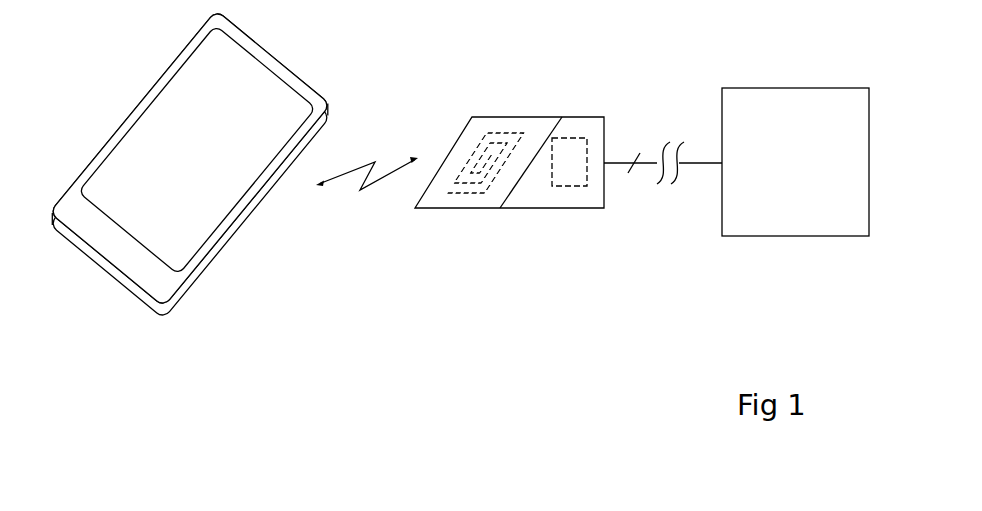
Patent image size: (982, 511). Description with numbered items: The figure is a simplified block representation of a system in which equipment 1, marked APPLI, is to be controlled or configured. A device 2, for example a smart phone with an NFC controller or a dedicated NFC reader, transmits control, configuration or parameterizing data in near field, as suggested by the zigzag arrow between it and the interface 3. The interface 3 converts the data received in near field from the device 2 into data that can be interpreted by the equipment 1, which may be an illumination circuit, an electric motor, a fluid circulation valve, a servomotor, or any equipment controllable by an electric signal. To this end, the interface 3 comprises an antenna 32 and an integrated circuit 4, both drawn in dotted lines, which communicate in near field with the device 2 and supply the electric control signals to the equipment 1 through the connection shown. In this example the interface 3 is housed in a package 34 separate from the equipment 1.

The equipment 1 is at (777, 87).
The device 2 is at (221, 258).
The interface 3 is at (509, 218).
The antenna 32 is at (483, 140).
The package 34 is at (565, 208).
The integrated circuit 4 is at (578, 137).